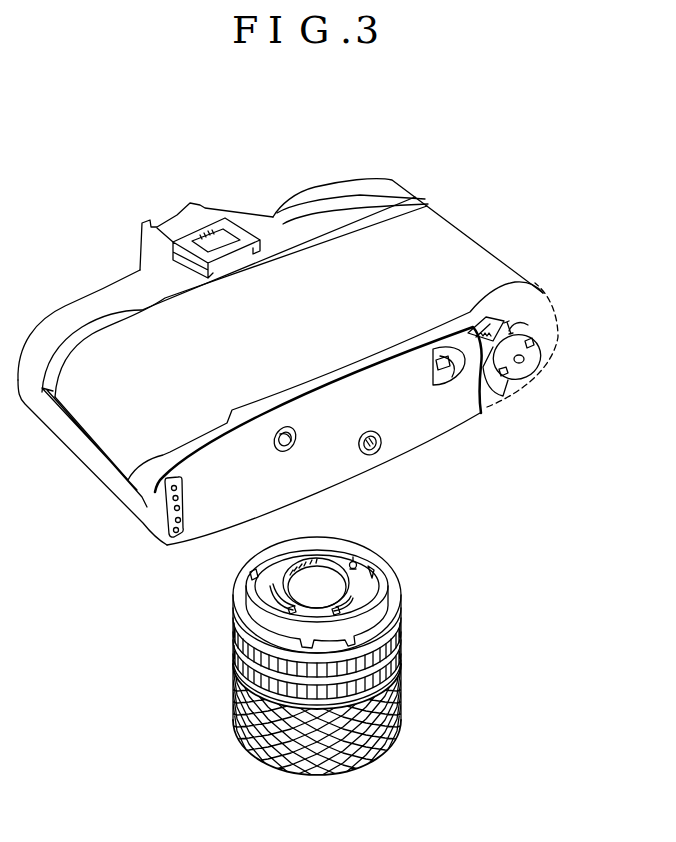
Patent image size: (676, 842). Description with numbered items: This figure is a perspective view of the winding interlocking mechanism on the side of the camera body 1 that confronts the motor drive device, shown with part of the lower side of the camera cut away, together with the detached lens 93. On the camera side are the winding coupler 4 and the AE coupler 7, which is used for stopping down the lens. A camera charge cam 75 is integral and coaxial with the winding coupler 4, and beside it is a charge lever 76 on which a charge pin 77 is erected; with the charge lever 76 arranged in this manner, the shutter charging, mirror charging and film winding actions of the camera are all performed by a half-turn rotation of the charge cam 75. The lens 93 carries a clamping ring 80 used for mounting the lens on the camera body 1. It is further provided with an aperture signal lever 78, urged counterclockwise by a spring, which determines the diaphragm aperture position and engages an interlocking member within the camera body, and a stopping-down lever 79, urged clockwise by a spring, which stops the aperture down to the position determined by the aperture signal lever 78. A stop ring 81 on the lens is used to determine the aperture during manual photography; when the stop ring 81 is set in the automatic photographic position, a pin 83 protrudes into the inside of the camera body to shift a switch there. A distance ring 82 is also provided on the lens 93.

The camera body 1 is at (311, 354).
The winding coupler 4 is at (543, 351).
The AE coupler 7 is at (276, 455).
The camera charge cam 75 is at (523, 323).
The charge lever 76 is at (487, 331).
The charge pin 77 is at (508, 333).
The aperture signal lever 78 is at (277, 600).
The stopping-down lever 79 is at (390, 620).
The clamping ring 80 is at (388, 577).
The stop ring 81 is at (388, 647).
The distance ring 82 is at (387, 697).
The pin 83 is at (355, 562).
The lens 93 is at (311, 680).